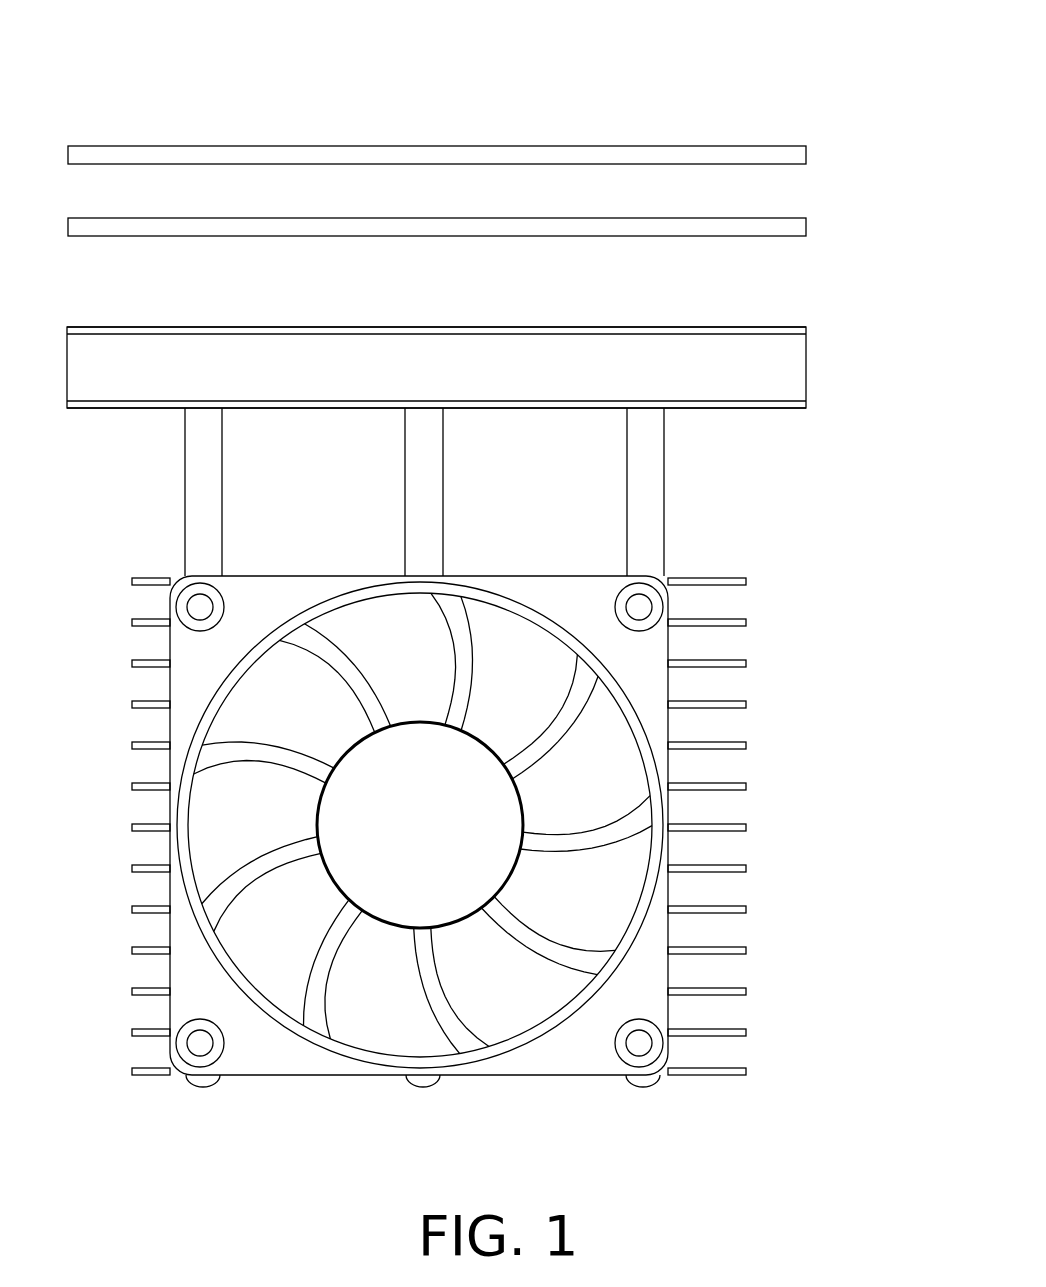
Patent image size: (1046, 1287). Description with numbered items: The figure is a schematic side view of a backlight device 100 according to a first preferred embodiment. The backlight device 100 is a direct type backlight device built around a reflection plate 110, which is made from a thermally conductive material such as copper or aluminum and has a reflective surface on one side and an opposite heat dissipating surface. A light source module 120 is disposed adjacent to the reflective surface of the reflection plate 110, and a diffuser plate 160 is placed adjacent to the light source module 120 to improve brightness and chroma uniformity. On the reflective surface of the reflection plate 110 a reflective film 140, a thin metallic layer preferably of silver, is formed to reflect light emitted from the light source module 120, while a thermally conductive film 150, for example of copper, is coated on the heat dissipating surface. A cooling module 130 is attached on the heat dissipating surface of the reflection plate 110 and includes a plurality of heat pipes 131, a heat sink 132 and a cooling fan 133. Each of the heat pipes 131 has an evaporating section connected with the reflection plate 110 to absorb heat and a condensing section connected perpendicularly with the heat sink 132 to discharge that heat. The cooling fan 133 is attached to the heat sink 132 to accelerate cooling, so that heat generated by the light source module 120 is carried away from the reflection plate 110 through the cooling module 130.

The backlight device 100 is at (428, 27).
The reflection plate 110 is at (483, 368).
The light source module 120 is at (800, 225).
The cooling module 130 is at (538, 747).
The heat pipes 131 is at (642, 505).
The heat sink 132 is at (738, 660).
The cooling fan 133 is at (507, 831).
The reflective film 140 is at (783, 330).
The thermally conductive film 150 is at (783, 405).
The diffuser plate 160 is at (738, 155).